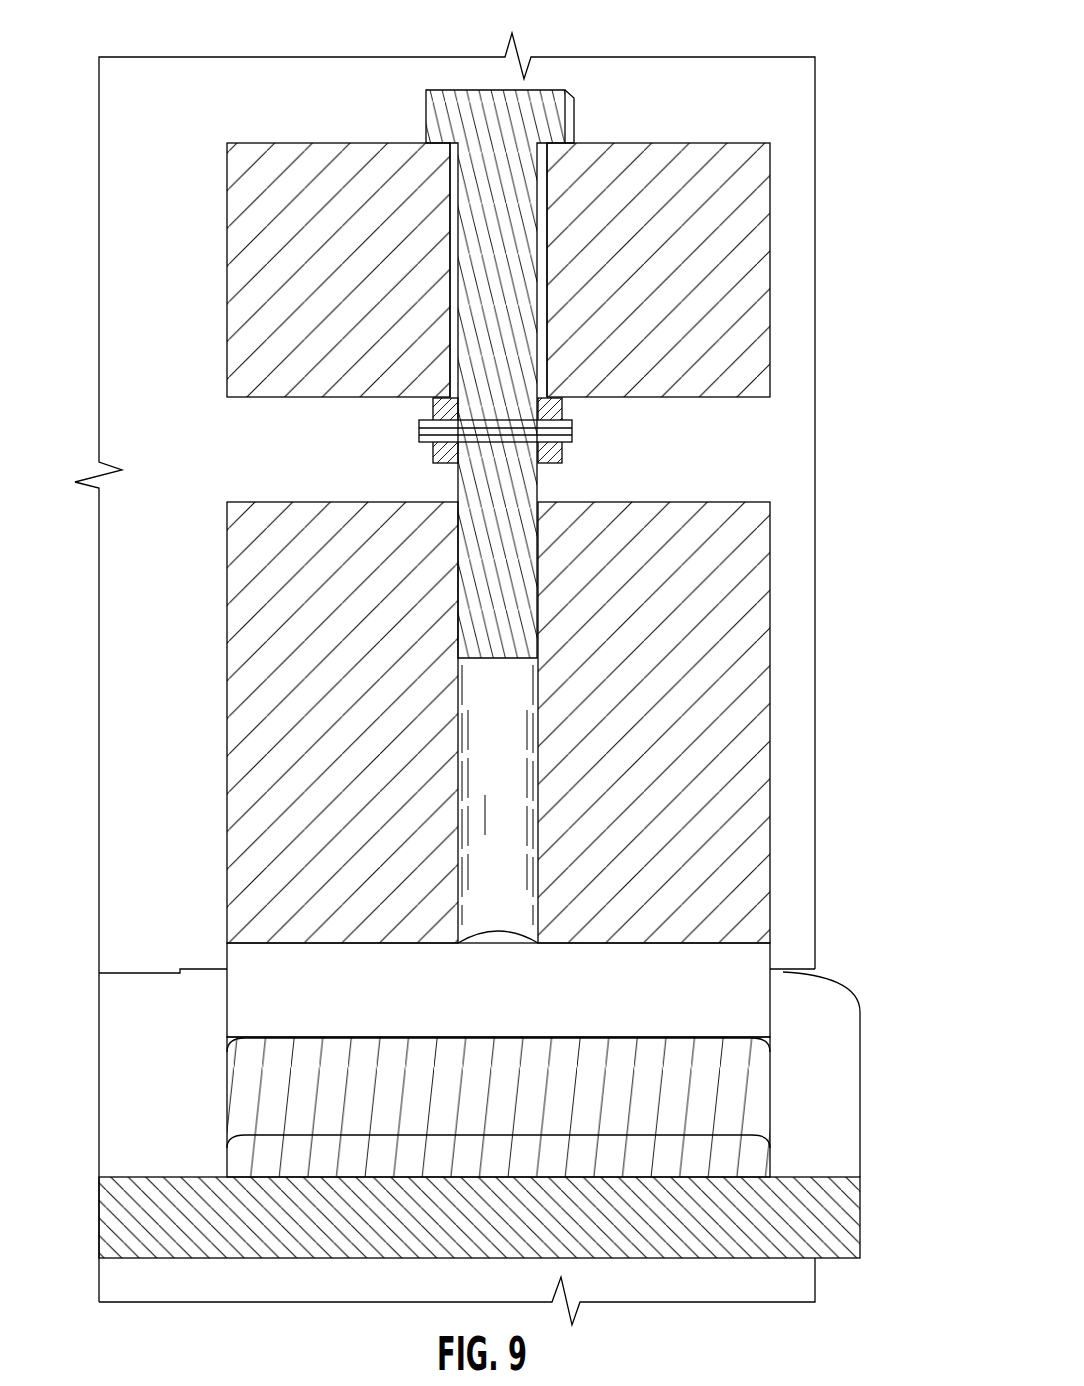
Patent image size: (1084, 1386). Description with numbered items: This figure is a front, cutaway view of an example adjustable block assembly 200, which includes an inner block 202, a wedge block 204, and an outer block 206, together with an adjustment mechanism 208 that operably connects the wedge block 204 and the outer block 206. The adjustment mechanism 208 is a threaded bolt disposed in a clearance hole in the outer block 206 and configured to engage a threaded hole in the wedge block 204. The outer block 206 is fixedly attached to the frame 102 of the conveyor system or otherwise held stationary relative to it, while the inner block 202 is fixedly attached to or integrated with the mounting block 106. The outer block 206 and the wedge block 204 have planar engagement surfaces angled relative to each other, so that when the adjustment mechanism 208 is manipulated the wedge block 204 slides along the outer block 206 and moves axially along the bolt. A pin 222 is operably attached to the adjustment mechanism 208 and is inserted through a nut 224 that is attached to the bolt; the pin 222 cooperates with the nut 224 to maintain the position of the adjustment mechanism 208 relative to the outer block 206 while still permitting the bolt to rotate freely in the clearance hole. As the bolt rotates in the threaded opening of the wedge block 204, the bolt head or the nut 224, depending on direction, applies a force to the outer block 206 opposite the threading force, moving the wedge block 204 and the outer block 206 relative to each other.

The adjustable block assembly 200 is at (778, 151).
The inner block 202 is at (722, 992).
The wedge block 204 is at (722, 841).
The outer block 206 is at (713, 352).
The adjustment mechanism 208 is at (513, 200).
The pin 222 is at (555, 430).
The nut 224 is at (555, 456).
The mounting block 106 is at (728, 1095).
The frame 102 is at (825, 1225).